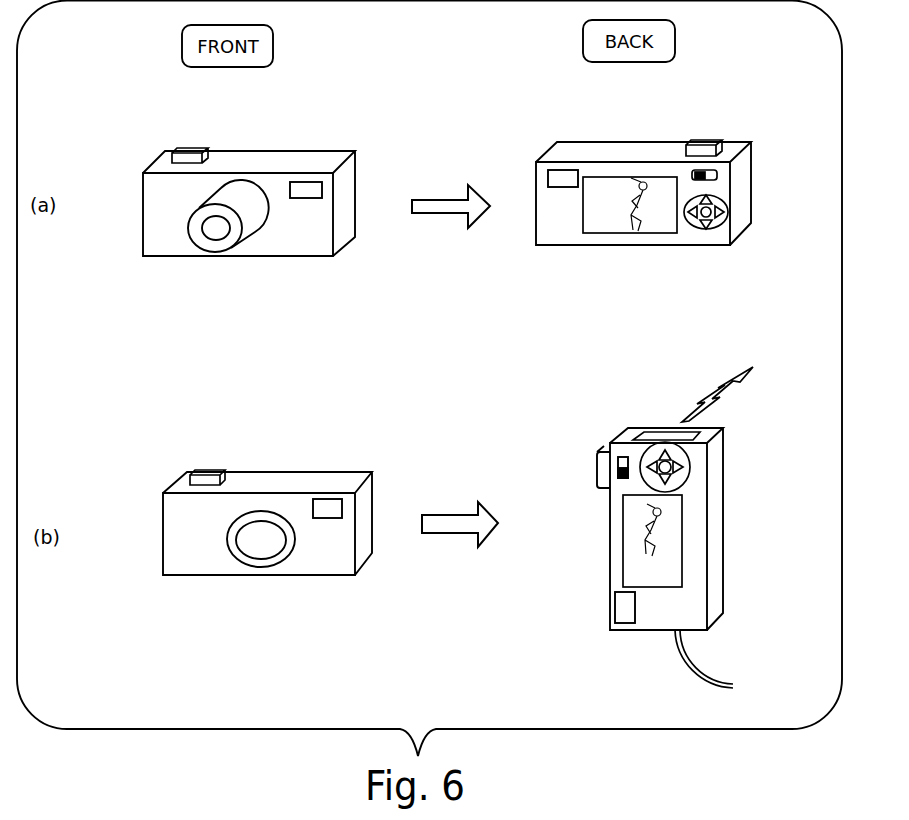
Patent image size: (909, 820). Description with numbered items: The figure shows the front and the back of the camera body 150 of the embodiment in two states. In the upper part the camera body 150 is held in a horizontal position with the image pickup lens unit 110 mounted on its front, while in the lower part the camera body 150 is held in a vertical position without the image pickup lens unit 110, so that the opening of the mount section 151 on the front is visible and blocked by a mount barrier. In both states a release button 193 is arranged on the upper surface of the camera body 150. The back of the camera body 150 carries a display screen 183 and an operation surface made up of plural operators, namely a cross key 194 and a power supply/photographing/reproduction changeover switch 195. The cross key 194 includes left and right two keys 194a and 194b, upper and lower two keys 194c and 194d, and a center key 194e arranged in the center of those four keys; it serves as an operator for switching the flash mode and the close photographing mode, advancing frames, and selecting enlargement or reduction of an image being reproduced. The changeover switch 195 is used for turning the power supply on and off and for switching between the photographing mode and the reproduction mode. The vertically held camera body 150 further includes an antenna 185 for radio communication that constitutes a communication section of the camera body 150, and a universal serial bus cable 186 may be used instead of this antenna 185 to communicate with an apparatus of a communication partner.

The camera body 150 is at (317, 123).
The release button 193 is at (190, 148).
The image pickup lens unit 110 is at (234, 251).
The mount section 151 is at (286, 553).
The display screen 183 is at (600, 233).
The power supply/photographing/reproduction changeover switch 195 is at (718, 175).
The cross key 194 is at (818, 177).
The left key 194a is at (691, 230).
The right key 194b is at (724, 212).
The upper key 194c is at (714, 199).
The lower key 194d is at (709, 233).
The center key 194e is at (724, 222).
The antenna 185 is at (659, 430).
The universal serial bus (USB) cable 186 is at (693, 662).